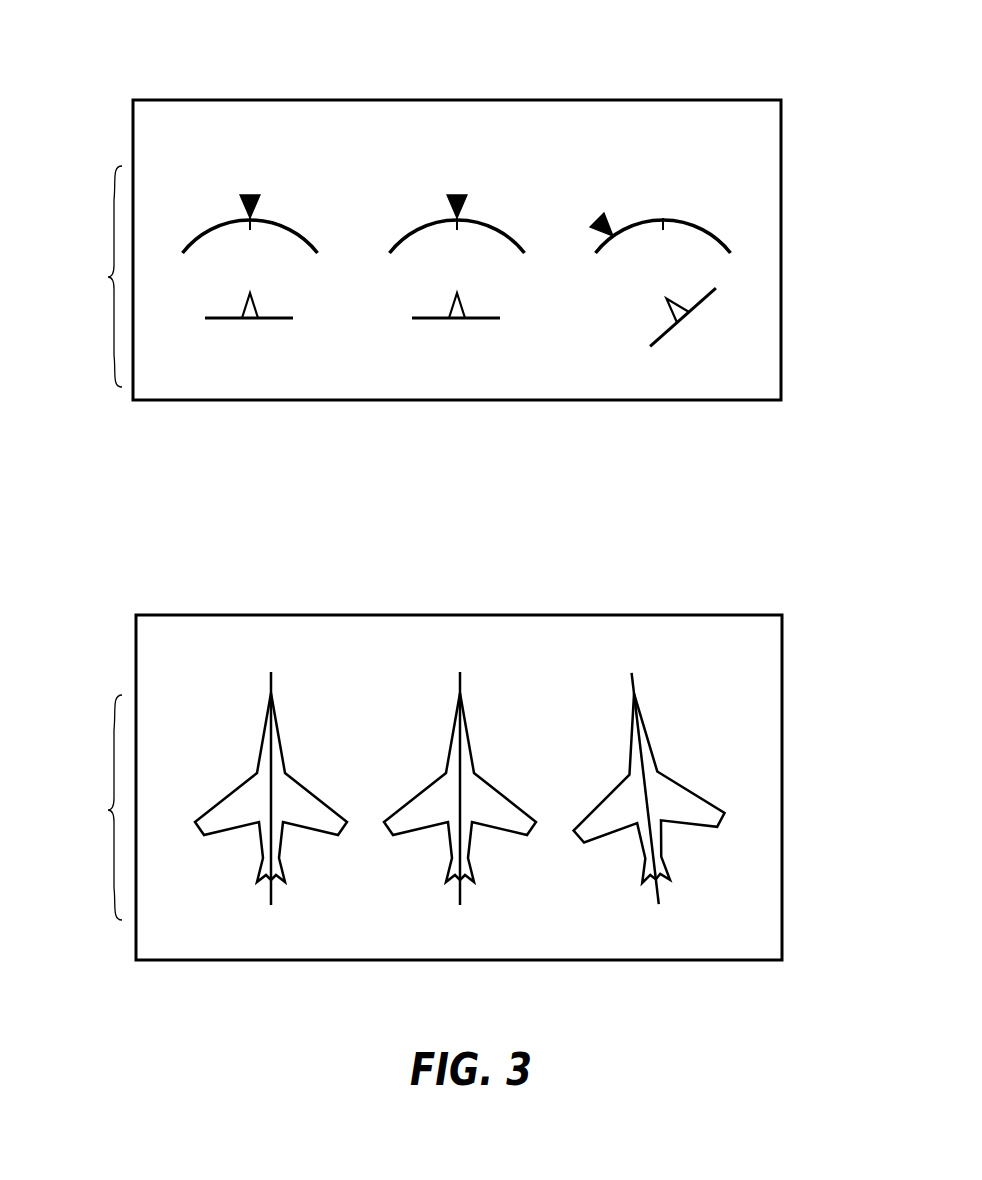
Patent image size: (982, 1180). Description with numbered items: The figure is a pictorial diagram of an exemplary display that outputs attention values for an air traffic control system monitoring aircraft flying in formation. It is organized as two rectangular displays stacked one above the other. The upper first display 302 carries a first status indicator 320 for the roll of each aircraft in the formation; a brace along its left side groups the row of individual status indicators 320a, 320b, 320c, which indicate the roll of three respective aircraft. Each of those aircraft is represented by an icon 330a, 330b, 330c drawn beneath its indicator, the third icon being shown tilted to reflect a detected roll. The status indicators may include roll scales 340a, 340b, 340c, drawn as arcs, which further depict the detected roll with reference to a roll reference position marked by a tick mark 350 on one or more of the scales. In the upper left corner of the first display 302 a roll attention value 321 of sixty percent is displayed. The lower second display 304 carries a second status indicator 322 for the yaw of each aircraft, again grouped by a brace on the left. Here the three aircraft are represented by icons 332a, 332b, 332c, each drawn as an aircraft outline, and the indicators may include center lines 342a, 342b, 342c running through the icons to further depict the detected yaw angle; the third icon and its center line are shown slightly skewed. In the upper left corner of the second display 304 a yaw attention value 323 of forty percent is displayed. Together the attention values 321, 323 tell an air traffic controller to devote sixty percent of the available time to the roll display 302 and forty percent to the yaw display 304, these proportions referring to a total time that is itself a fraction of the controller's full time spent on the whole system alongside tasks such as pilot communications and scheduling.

The first display 302 is at (196, 95).
The roll attention value 321 is at (140, 127).
The first status indicator 320 is at (92, 276).
The status indicator 320a is at (270, 206).
The status indicator 320b is at (479, 212).
The status indicator 320c is at (644, 211).
The tick mark 350 is at (666, 218).
The roll scale 340a is at (183, 255).
The roll scale 340b is at (390, 255).
The roll scale 340c is at (610, 246).
The icon 330a is at (217, 320).
The icon 330b is at (425, 320).
The icon 330c is at (665, 334).
The second display 304 is at (203, 611).
The yaw attention value 323 is at (140, 645).
The second status indicator 322 is at (92, 807).
The icon 332a is at (284, 703).
The icon 332b is at (479, 708).
The icon 332c is at (673, 708).
The center line 342a is at (272, 896).
The center line 342b is at (462, 896).
The center line 342c is at (662, 898).